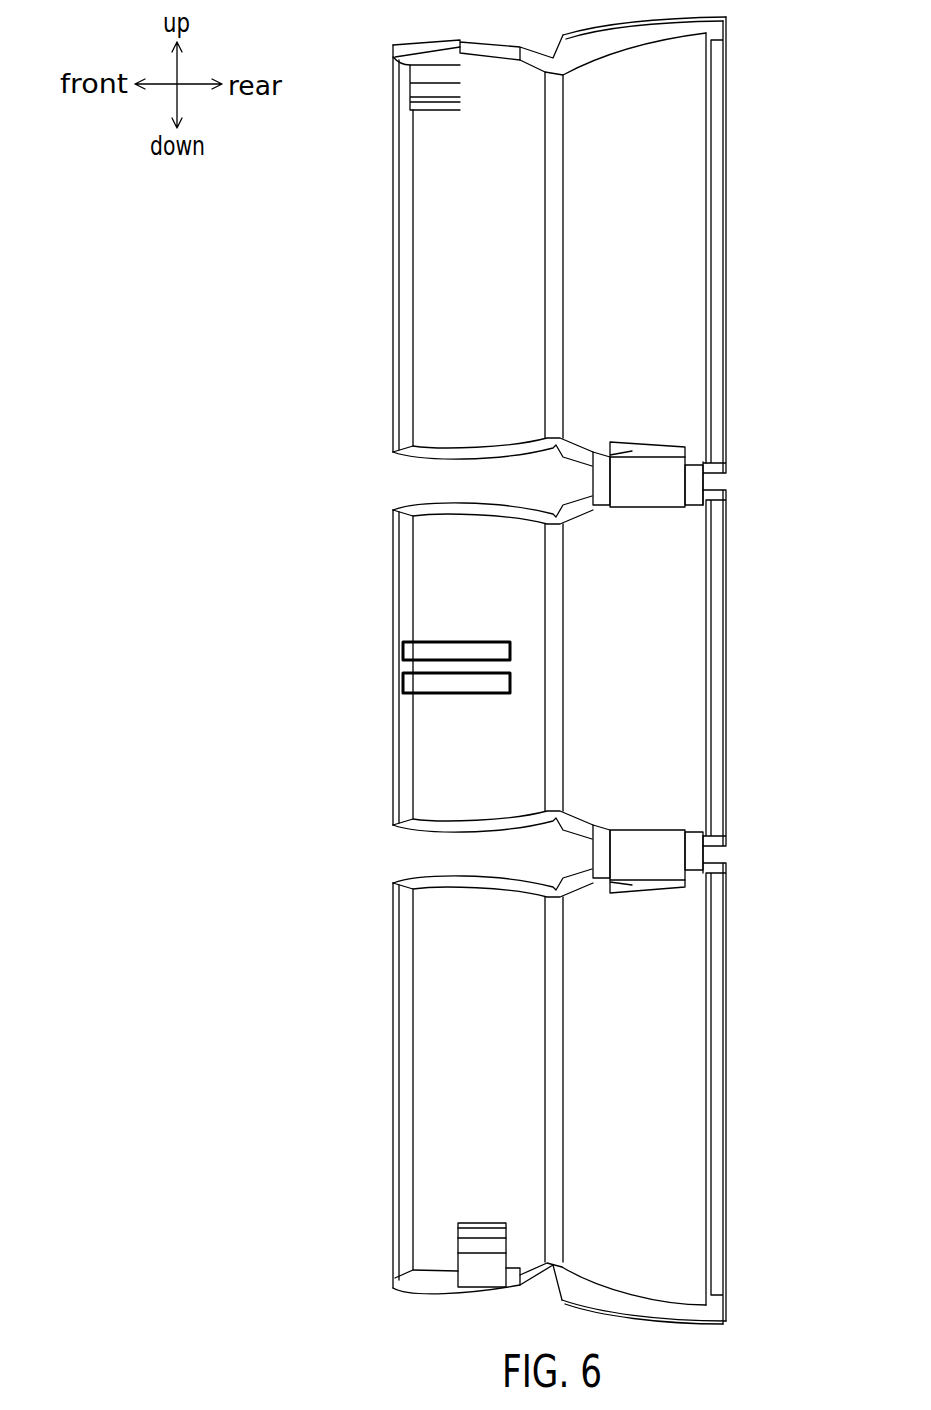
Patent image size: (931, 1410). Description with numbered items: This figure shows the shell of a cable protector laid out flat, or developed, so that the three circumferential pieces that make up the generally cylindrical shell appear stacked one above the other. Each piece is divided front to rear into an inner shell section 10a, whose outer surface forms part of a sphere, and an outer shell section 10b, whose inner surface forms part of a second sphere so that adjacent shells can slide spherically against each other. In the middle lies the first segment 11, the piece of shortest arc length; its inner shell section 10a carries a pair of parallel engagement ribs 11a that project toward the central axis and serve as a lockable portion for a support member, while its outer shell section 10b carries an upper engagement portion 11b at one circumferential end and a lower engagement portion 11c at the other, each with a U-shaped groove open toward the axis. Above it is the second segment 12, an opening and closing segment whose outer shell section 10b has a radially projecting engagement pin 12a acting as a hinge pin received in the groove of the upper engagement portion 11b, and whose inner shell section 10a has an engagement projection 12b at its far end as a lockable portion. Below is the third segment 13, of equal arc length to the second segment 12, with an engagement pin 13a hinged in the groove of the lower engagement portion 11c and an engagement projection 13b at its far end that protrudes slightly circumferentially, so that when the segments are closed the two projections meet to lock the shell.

The inner shell section 10a is at (470, 293).
The outer shell section 10b is at (647, 178).
The first segment 11 is at (393, 592).
The engagement ribs 11a is at (447, 685).
The upper engagement portion 11b is at (648, 487).
The lower engagement portion 11c is at (655, 843).
The second segment 12 is at (393, 220).
The engagement pin 12a is at (695, 482).
The engagement projection 12b is at (430, 103).
The third segment 13 is at (393, 1022).
The engagement pin 13a is at (697, 850).
The engagement projection 13b is at (470, 1233).